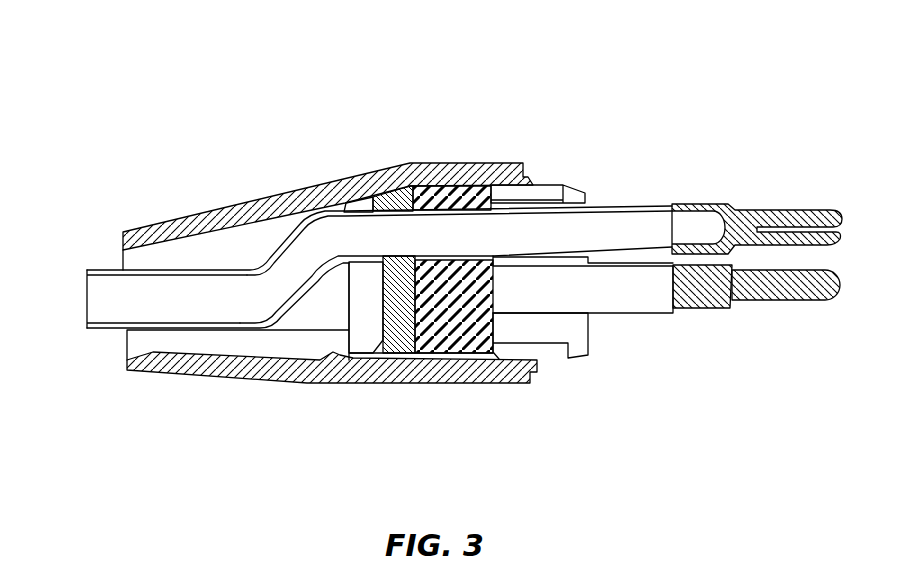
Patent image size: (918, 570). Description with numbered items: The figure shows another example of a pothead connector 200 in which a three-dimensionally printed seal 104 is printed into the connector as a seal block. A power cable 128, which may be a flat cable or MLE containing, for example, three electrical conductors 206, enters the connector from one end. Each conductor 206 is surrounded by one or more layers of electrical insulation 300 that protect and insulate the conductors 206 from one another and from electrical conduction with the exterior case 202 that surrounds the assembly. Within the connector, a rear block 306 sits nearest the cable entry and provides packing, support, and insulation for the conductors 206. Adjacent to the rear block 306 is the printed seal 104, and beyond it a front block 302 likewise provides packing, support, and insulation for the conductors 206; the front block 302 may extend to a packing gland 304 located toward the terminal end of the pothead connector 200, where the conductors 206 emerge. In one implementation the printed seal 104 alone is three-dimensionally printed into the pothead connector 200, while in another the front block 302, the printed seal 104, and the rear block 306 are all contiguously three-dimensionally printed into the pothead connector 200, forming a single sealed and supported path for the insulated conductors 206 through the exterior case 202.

The pothead connector 200 is at (328, 55).
The exterior case 202 is at (237, 203).
The power cable 128 is at (87, 297).
The electrical insulation 300 is at (105, 268).
The rear block 306 is at (357, 203).
The 3D-printed seal 104 is at (397, 205).
The front block 302 is at (460, 193).
The packing gland 304 is at (545, 188).
The electrical conductor 206 is at (803, 207).